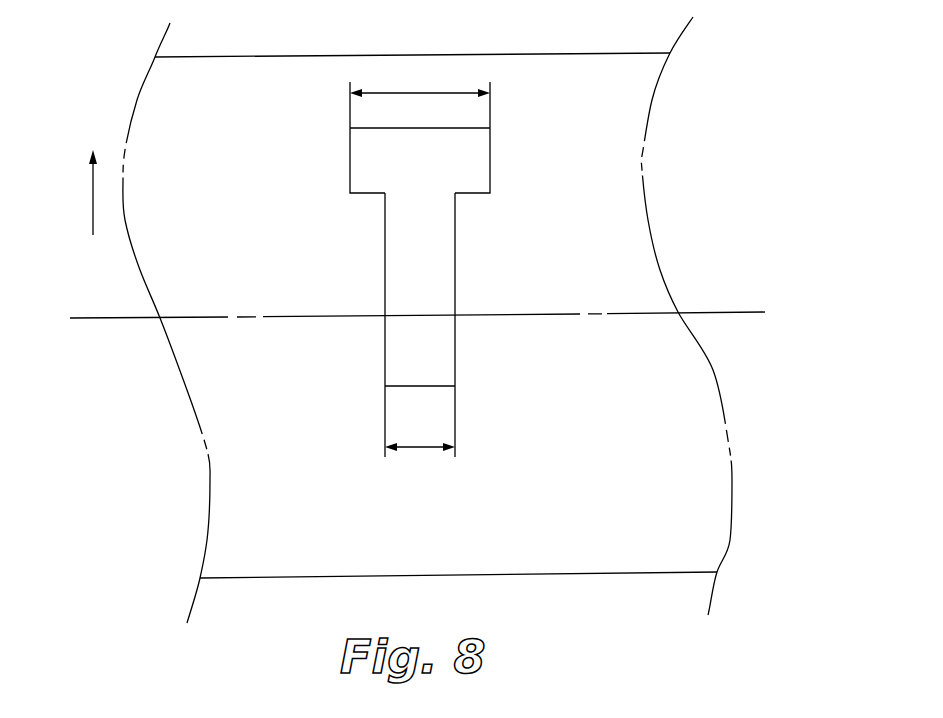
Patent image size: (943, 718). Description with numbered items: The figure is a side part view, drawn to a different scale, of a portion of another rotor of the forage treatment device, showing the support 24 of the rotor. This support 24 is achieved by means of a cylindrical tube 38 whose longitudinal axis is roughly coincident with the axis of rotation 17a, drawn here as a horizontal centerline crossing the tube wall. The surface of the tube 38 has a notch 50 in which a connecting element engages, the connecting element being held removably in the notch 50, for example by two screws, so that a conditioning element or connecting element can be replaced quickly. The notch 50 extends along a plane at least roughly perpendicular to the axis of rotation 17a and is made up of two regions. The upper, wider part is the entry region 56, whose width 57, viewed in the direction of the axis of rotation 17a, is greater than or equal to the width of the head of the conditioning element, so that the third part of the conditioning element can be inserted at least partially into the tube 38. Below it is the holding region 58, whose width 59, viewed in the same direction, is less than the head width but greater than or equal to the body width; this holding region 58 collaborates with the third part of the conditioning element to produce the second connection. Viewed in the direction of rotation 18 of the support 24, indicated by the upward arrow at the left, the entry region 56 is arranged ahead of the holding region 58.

The axis of rotation 17a is at (735, 311).
The direction of rotation 18 is at (93, 194).
The support 24 is at (182, 394).
The cylindrical tube 38 is at (573, 53).
The notch 50 is at (397, 261).
The entry region 56 is at (490, 172).
The width of the entry region 57 is at (420, 81).
The holding region 58 is at (455, 344).
The width of the holding region 59 is at (420, 433).